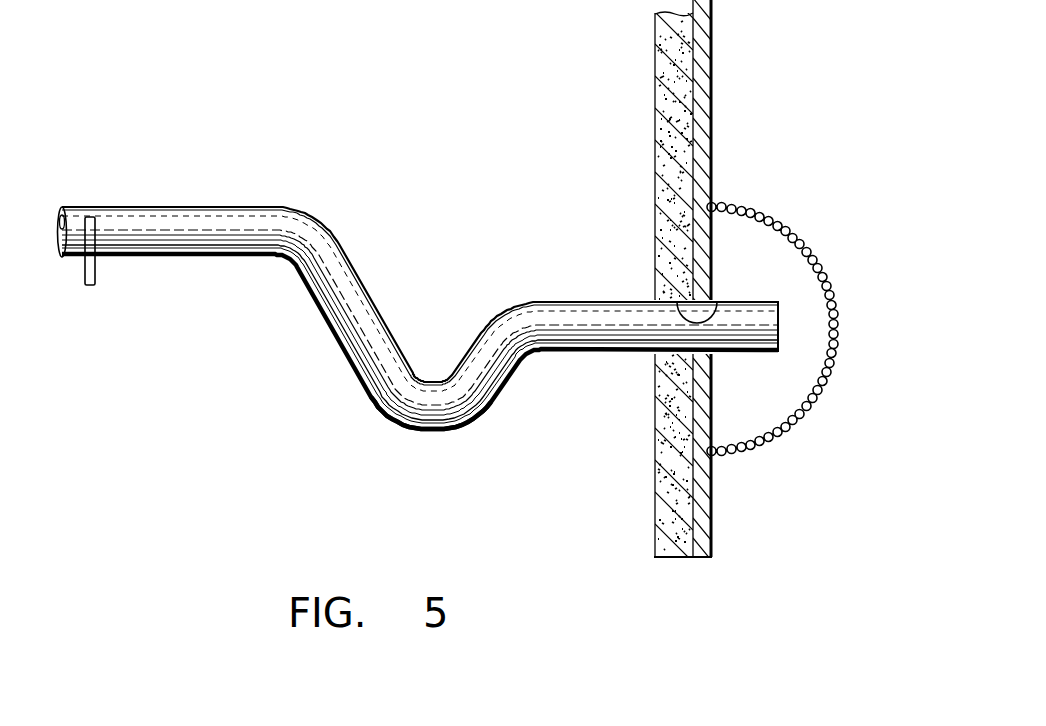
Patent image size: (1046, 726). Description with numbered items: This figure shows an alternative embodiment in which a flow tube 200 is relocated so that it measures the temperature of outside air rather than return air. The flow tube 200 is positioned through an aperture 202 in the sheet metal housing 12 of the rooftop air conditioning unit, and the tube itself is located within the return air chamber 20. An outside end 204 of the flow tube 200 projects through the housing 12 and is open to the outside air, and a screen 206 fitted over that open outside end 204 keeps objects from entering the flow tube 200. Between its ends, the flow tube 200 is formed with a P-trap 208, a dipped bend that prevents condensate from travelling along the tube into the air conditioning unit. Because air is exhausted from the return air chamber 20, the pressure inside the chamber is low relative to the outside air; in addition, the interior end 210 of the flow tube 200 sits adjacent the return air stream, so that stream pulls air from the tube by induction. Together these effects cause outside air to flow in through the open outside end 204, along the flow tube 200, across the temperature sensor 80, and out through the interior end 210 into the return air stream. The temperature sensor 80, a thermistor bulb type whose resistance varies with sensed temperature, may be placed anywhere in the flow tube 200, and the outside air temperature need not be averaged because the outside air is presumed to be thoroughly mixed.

The housing 12 is at (712, 65).
The return air chamber 20 is at (461, 332).
The temperature sensor 80 is at (85, 270).
The flow tube 200 is at (268, 208).
The aperture 202 is at (712, 318).
The outside end 204 is at (740, 353).
The screen 206 is at (825, 272).
The P-trap 208 is at (433, 437).
The interior end 210 is at (63, 210).